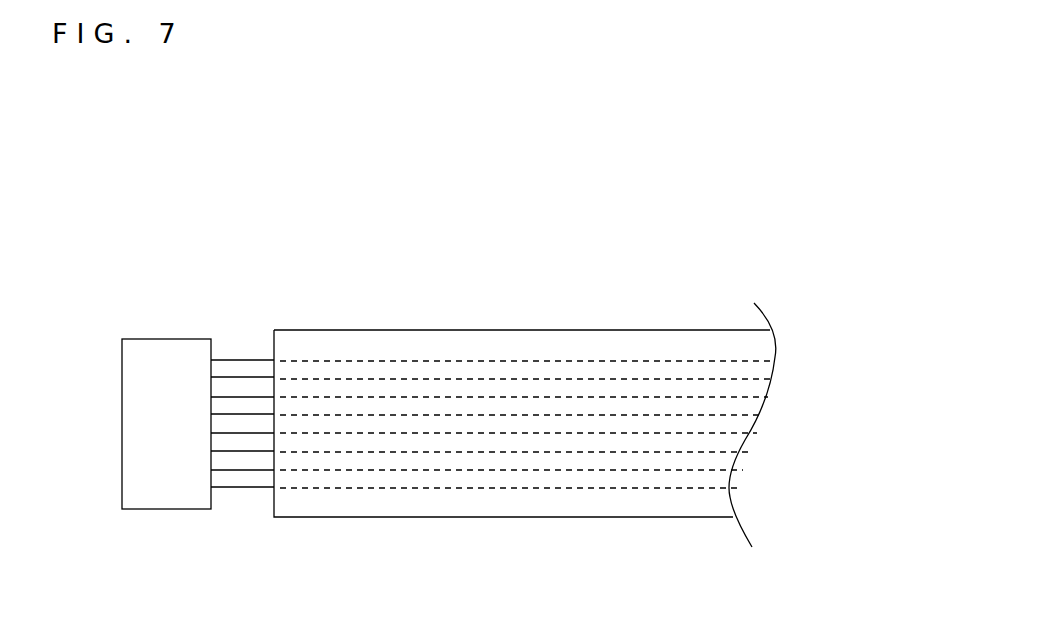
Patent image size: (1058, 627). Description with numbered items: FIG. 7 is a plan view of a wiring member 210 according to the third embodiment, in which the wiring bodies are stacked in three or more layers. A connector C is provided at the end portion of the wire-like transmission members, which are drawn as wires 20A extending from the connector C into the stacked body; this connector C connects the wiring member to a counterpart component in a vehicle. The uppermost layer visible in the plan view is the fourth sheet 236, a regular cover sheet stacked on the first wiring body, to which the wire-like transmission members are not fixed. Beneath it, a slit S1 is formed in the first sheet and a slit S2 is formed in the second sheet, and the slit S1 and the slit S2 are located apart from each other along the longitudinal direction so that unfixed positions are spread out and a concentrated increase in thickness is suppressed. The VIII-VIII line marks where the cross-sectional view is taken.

The wiring member 210 is at (181, 176).
The connector C is at (166, 509).
The wires 20A is at (244, 403).
The fourth sheet 236 is at (341, 506).
The slit S2 is at (411, 338).
The slit S1 is at (538, 338).
The VIII-VIII line VIII is at (548, 330).